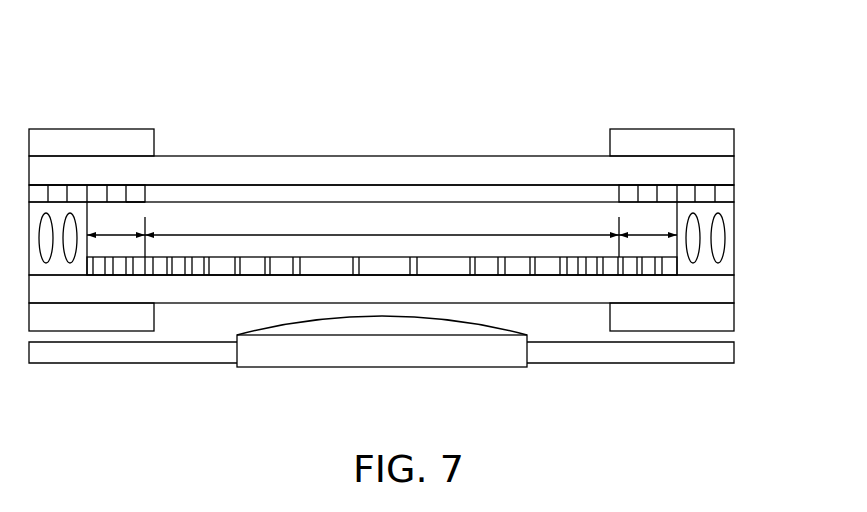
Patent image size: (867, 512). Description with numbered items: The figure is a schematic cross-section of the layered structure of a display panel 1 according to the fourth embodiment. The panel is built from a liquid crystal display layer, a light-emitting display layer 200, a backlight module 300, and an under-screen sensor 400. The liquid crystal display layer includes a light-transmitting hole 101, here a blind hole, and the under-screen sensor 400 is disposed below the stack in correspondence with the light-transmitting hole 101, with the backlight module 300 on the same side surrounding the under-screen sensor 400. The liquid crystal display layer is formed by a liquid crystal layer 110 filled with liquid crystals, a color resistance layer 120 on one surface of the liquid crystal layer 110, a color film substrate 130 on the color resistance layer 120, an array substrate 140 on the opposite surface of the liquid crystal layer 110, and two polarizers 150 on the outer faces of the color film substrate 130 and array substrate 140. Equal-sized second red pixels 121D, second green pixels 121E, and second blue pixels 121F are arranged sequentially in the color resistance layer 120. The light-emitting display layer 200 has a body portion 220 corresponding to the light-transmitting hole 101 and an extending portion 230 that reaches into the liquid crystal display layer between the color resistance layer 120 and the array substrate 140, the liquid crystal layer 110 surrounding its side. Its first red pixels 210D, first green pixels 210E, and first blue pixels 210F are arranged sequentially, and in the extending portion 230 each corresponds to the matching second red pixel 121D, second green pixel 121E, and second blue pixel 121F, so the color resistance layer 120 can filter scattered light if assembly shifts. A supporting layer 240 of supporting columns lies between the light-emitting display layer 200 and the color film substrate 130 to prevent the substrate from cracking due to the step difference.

The display panel 1 is at (352, 74).
The light-transmitting hole 101 is at (567, 133).
The liquid crystal layer 110 is at (734, 241).
The color resistance layer 120 is at (422, 147).
The second red pixel 121D is at (98, 192).
The second green pixel 121E is at (116, 192).
The second blue pixel 121F is at (135, 192).
The color film substrate 130 is at (734, 173).
The array substrate 140 is at (734, 292).
The polarizers 150 is at (734, 146).
The light-emitting display layer 200 is at (361, 262).
The first red pixel 210D is at (97, 268).
The first green pixel 210E is at (118, 268).
The first blue pixel 210F is at (137, 268).
The body portion 220 is at (382, 225).
The extending portion 230 is at (382, 234).
The supporting layer 240 is at (357, 183).
The backlight module 300 is at (734, 356).
The under-screen sensor 400 is at (383, 367).